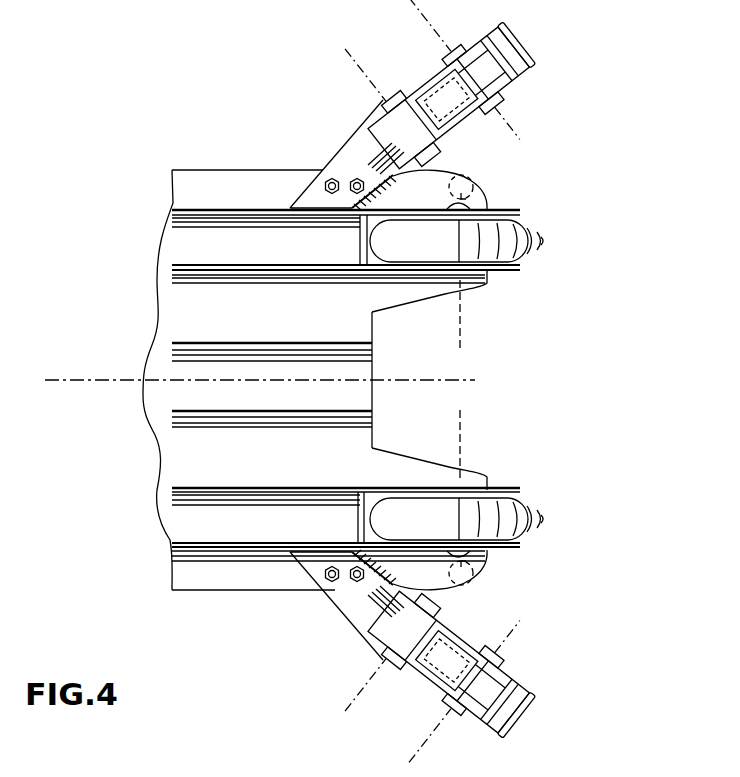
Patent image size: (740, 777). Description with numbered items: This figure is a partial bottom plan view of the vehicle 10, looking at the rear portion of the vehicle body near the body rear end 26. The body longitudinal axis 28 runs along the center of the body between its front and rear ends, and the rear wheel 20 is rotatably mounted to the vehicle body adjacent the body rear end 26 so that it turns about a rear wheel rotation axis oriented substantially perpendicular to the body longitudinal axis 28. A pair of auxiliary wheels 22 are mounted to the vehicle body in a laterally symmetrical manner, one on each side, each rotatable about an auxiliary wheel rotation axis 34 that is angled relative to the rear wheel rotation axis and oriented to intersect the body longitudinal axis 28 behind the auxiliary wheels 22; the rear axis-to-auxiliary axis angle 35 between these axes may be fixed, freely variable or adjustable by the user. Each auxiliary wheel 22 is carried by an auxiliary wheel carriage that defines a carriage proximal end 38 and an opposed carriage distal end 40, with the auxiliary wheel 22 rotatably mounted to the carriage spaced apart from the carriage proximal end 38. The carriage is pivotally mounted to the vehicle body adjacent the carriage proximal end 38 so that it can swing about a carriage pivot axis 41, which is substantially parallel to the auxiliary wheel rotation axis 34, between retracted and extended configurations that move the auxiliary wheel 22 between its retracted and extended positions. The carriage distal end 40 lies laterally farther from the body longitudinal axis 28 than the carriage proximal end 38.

The vehicle 10 is at (580, 346).
The rear wheel 20 is at (543, 243).
The auxiliary wheel 22 is at (523, 78).
The body rear end 26 is at (487, 283).
The body longitudinal axis 28 is at (128, 380).
The auxiliary wheel rotation axis 34 is at (522, 126).
The rear axis-to-auxiliary axis angle 35 is at (473, 187).
The carriage proximal end 38 is at (373, 124).
The carriage distal end 40 is at (510, 93).
The carriage pivot axis 41 is at (360, 70).